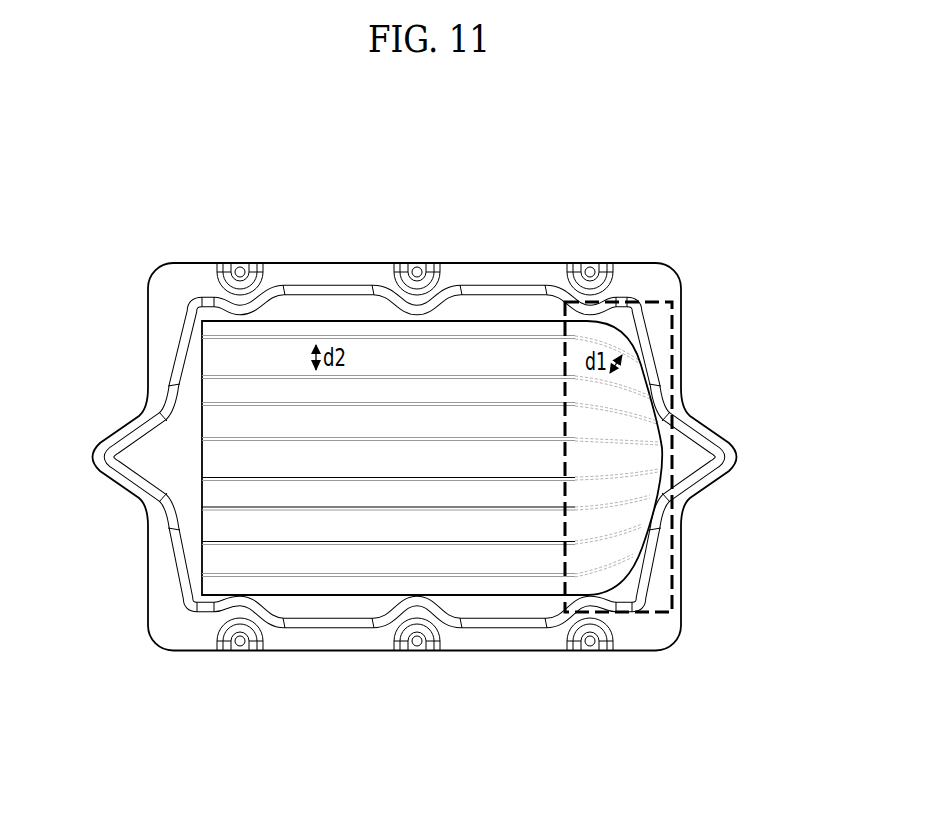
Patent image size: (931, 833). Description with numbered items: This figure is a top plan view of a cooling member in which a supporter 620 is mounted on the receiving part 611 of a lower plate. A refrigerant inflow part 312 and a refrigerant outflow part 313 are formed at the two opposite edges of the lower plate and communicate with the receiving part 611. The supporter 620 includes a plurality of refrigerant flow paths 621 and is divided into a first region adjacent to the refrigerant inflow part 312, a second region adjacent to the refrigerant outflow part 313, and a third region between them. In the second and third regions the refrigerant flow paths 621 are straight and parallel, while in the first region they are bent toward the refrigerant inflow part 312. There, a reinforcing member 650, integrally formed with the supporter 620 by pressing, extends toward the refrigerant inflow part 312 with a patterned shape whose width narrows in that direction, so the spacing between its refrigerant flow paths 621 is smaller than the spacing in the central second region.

The refrigerant inflow part 312 is at (731, 457).
The refrigerant outflow part 313 is at (113, 431).
The receiving part 611 is at (472, 605).
The supporter 620 is at (328, 592).
The refrigerant flow paths 621 is at (522, 553).
The reinforcing member 650 is at (673, 349).